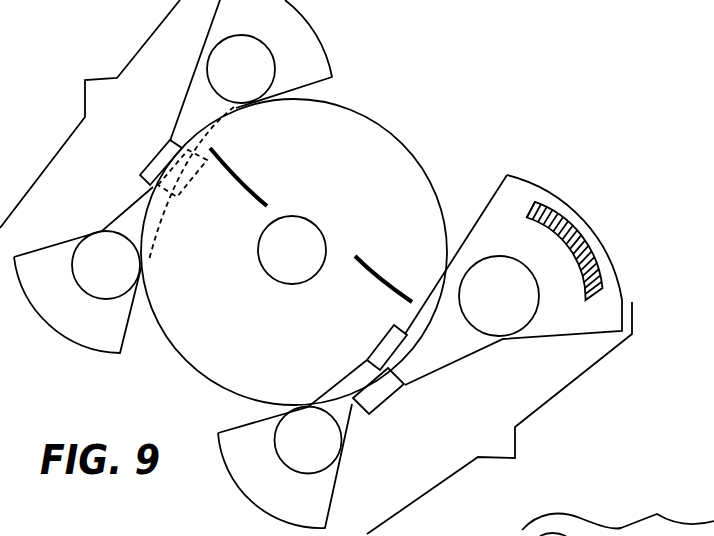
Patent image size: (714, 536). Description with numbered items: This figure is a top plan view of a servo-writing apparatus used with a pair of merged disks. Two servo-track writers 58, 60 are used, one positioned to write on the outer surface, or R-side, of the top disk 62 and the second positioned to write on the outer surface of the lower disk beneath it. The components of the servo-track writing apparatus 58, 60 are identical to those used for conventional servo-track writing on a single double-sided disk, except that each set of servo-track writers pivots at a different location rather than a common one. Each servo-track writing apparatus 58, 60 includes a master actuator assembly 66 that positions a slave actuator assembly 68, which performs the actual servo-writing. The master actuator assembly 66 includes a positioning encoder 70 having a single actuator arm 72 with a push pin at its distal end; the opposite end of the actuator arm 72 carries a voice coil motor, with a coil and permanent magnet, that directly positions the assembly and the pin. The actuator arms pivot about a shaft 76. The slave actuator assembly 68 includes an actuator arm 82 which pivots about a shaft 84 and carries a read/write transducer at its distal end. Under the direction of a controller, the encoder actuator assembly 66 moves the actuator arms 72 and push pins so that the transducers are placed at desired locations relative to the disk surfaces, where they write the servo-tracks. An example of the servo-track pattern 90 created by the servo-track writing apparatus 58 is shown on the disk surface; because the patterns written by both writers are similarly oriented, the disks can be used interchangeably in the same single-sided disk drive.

The servo-track writer 58 is at (90, 114).
The servo-track writer 60 is at (499, 418).
The top disk 62 is at (362, 130).
The master actuator assembly 66 is at (618, 507).
The slave actuator assembly 68 is at (511, 534).
The positioning encoder 70 is at (186, 77).
The actuator arm 72 is at (198, 116).
The shaft 76 is at (258, 81).
The actuator arm 82 is at (137, 224).
The shaft 84 is at (122, 279).
The servo-track pattern 90 is at (224, 167).